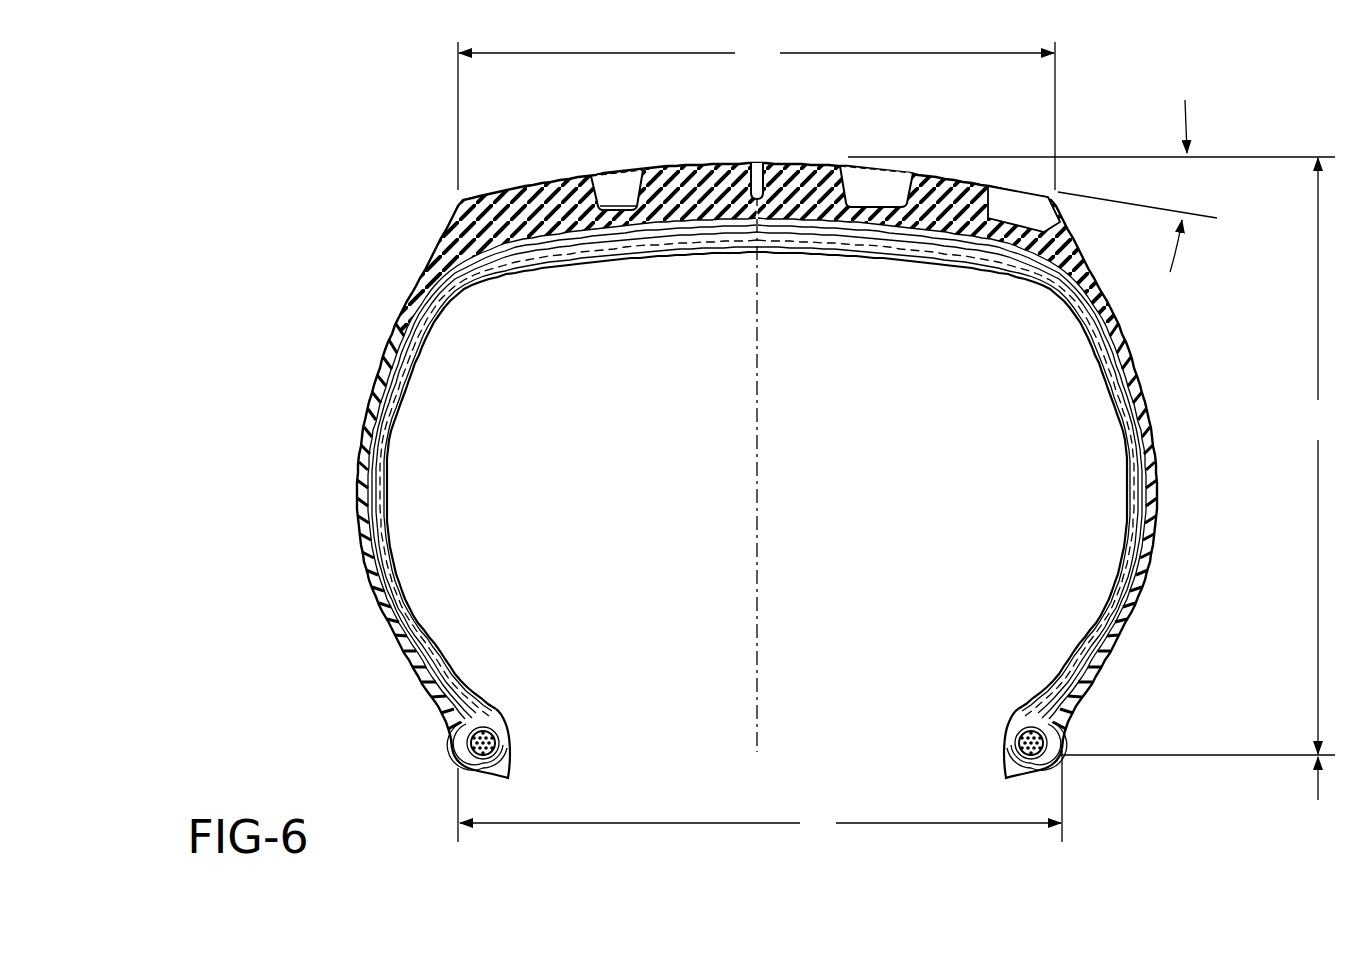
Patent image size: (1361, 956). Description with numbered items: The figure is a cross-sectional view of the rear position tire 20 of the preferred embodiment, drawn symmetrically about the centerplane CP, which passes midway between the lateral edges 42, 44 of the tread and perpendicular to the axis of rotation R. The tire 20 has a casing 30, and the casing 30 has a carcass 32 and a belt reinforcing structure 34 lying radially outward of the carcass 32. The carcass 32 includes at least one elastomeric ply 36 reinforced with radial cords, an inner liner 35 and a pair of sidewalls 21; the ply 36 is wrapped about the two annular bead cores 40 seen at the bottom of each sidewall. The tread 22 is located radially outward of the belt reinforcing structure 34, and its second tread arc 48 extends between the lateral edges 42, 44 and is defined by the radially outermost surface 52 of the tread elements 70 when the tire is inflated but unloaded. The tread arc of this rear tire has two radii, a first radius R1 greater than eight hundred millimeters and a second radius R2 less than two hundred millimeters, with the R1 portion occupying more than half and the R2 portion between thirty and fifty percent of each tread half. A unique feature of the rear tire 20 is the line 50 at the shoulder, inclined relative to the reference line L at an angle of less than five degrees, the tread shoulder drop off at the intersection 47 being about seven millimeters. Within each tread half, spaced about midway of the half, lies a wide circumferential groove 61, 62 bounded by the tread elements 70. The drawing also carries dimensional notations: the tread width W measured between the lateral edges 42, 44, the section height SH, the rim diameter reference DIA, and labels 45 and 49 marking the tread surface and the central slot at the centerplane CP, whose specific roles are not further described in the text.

The rear position tire 20 is at (1216, 403).
The sidewall 21 is at (1141, 385).
The tread 22 is at (564, 168).
The casing 30 is at (378, 280).
The carcass 32 is at (361, 457).
The belt reinforcing structure 34 is at (690, 228).
The inner liner 35 is at (610, 256).
The elastomeric ply 36 is at (389, 425).
The annular bead core 40 is at (497, 745).
The lateral edge 42 is at (456, 100).
The lateral edge 44 is at (1058, 97).
The tread surface 45 is at (547, 180).
The intersection 47 is at (1060, 192).
The second tread arc 48 is at (599, 176).
The centerplane groove 49 is at (759, 160).
The inclined line 50 is at (1118, 204).
The radially outermost surface 52 is at (679, 171).
The circumferential groove 61 is at (615, 196).
The circumferential groove 62 is at (868, 190).
The tread element 70 is at (655, 177).
The centerplane CP is at (757, 163).
The tread width W is at (756, 53).
The reference line L is at (1279, 155).
The section height SH is at (1318, 456).
The rim diameter DIA is at (1199, 791).
The axis of rotation R is at (760, 796).
The first radius R1 is at (795, 175).
The second radius R2 is at (928, 182).